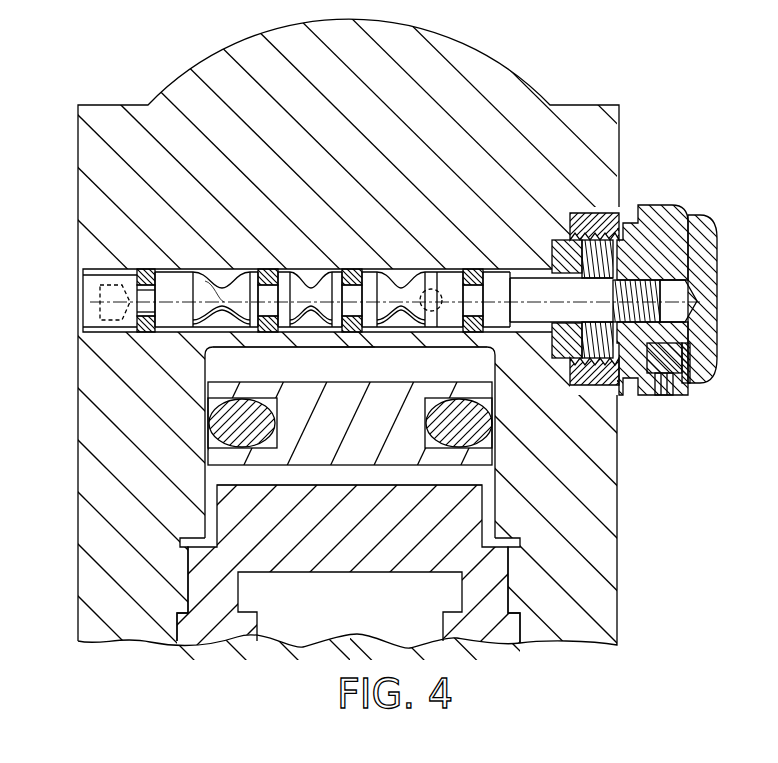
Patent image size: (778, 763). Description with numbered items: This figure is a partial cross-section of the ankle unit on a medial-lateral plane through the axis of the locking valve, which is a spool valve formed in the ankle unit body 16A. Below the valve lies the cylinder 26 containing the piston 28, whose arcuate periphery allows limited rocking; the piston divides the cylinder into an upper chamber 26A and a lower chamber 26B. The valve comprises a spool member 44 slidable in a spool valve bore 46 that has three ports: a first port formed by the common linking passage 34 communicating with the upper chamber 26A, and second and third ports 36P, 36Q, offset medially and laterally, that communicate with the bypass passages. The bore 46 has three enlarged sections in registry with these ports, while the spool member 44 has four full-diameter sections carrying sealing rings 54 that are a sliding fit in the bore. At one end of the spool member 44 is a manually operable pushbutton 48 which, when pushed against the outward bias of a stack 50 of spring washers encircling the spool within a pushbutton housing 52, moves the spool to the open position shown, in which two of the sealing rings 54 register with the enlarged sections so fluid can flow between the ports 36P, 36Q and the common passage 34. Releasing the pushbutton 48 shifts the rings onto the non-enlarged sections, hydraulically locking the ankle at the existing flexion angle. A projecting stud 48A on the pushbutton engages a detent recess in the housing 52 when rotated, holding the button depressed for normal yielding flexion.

The ankle unit body 16A is at (607, 558).
The cylinder 26 is at (497, 437).
The upper chamber 26A is at (220, 372).
The lower chamber 26B is at (215, 478).
The piston 28 is at (364, 431).
The common linking passage 34 is at (352, 336).
The second port 36P is at (235, 285).
The third port 36Q is at (437, 287).
The spool member 44 is at (530, 320).
The spool valve bore 46 is at (398, 272).
The pushbutton 48 is at (719, 250).
The projecting stud 48A is at (680, 395).
The stack of spring washers 50 is at (612, 393).
The pushbutton housing 52 is at (660, 205).
The sealing rings 54 is at (143, 270).